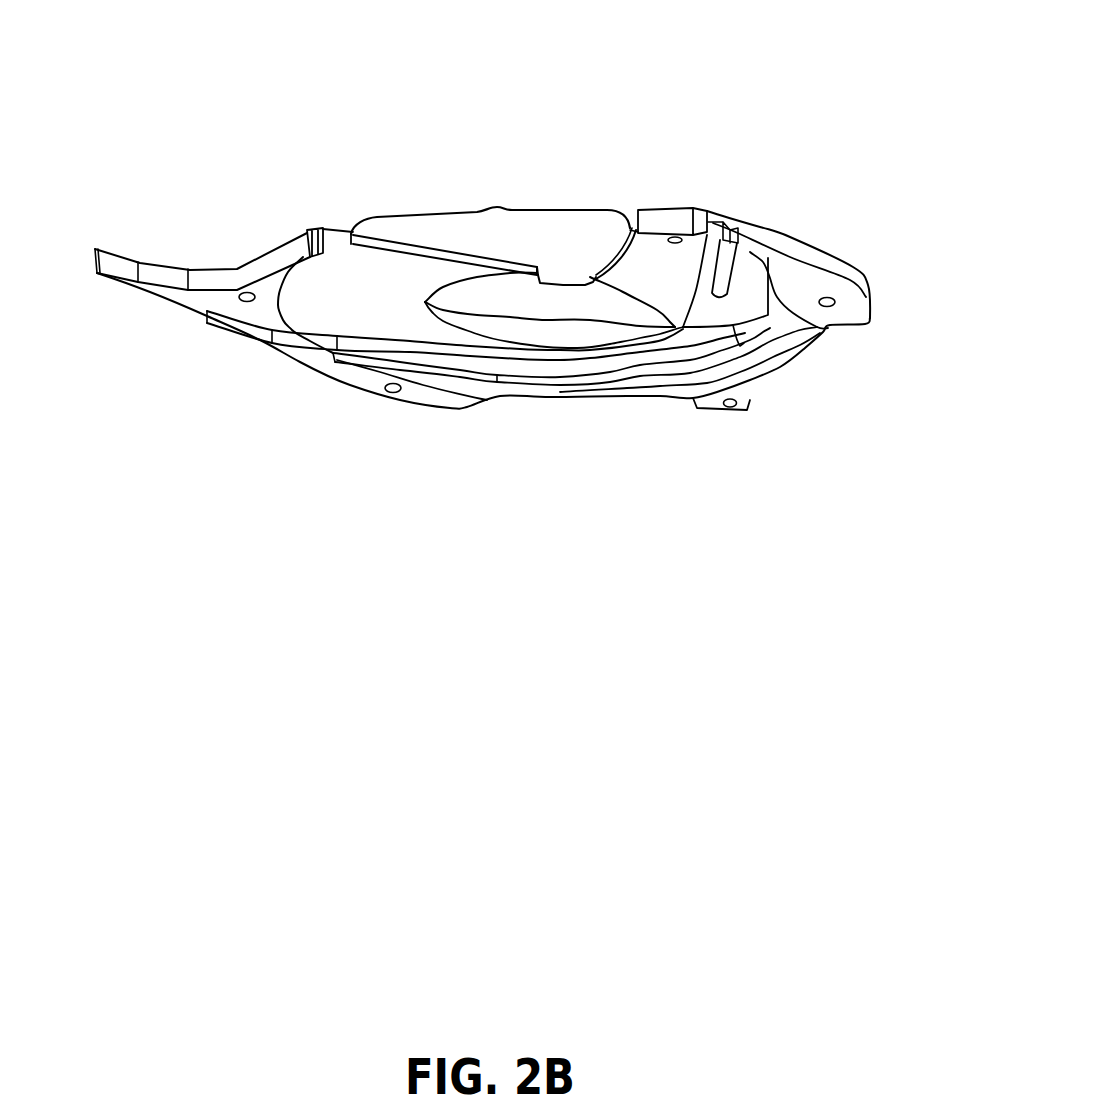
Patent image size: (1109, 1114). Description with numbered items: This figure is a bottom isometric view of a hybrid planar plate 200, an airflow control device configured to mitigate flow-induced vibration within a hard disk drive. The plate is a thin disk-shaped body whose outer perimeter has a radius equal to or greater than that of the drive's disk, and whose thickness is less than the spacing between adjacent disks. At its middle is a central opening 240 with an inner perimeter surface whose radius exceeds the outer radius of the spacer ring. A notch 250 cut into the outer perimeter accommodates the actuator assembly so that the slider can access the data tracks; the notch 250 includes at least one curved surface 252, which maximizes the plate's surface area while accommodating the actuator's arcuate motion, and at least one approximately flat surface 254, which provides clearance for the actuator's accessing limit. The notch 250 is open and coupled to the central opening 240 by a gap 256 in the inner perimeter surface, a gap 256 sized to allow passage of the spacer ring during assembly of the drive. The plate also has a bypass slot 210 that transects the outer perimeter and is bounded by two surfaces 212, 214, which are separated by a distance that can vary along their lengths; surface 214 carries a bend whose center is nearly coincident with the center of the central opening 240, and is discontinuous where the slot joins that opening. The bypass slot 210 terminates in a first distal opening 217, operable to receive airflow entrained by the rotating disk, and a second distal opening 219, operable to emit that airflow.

The hybrid planar plate 200 is at (789, 146).
The bypass slot 210 is at (730, 323).
The surface 212 is at (737, 343).
The surface 214 is at (718, 297).
The first distal opening 217 is at (707, 210).
The second distal opening 219 is at (208, 318).
The central opening 240 is at (548, 320).
The notch 250 is at (490, 203).
The curved surface 252 is at (618, 250).
The approximately flat surface 254 is at (418, 248).
The gap 256 is at (565, 286).